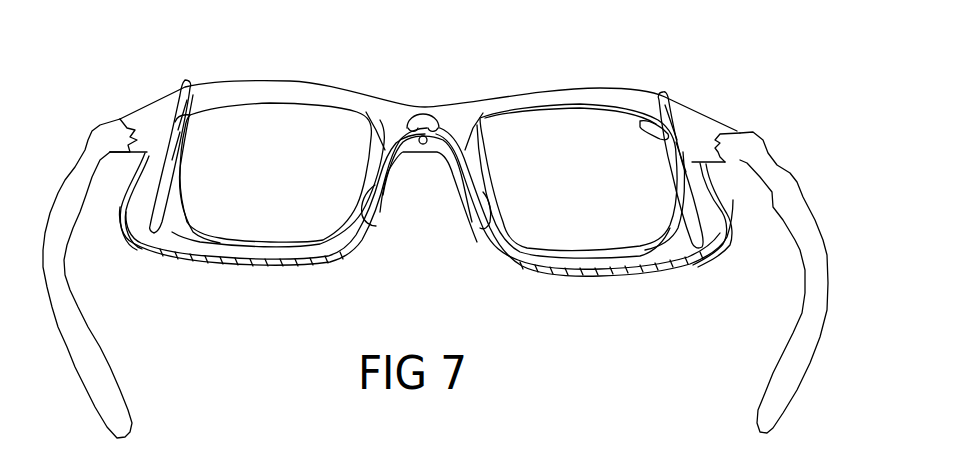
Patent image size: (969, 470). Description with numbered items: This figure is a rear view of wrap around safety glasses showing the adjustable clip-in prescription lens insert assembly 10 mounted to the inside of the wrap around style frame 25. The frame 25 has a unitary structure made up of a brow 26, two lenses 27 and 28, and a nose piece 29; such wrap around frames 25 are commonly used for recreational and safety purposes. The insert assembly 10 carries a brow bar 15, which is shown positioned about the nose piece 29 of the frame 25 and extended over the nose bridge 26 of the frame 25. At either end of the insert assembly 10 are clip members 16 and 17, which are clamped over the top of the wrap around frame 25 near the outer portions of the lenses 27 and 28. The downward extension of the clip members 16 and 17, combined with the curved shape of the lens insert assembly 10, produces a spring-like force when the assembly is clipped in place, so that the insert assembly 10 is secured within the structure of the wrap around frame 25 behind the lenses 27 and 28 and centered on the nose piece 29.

The adjustable clip-in prescription lens insert assembly 10 is at (567, 98).
The brow bar 15 is at (460, 138).
The clip member 16 is at (687, 88).
The clip member 17 is at (163, 72).
The wrap around style frame 25 is at (344, 79).
The brow 26 is at (251, 86).
The lens 27 is at (180, 240).
The lens 28 is at (687, 248).
The nose piece 29 is at (473, 188).